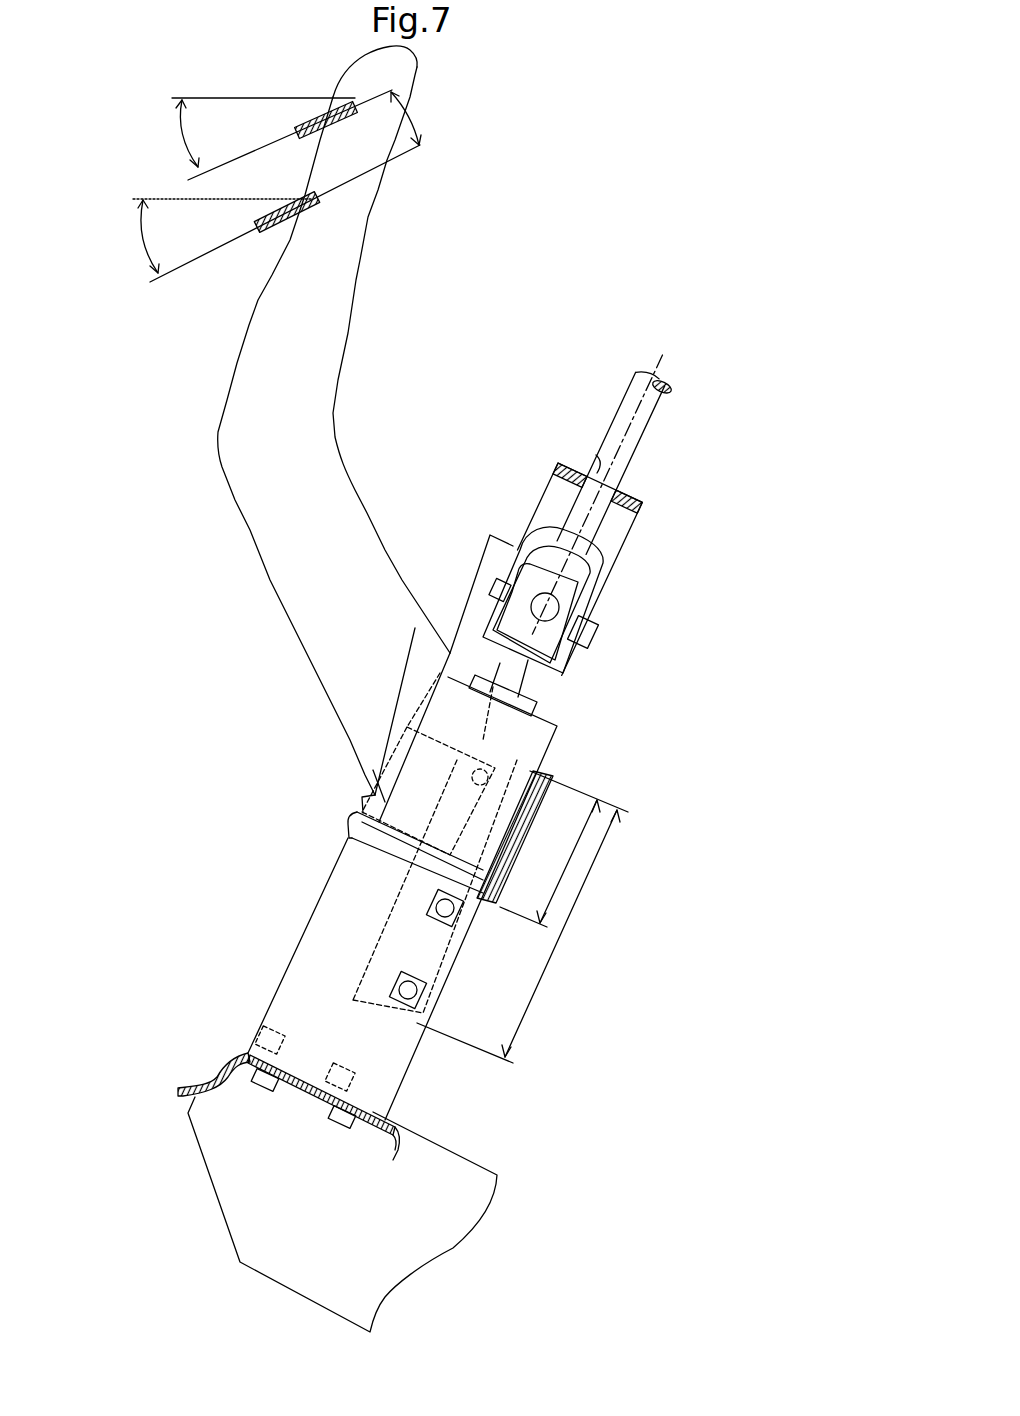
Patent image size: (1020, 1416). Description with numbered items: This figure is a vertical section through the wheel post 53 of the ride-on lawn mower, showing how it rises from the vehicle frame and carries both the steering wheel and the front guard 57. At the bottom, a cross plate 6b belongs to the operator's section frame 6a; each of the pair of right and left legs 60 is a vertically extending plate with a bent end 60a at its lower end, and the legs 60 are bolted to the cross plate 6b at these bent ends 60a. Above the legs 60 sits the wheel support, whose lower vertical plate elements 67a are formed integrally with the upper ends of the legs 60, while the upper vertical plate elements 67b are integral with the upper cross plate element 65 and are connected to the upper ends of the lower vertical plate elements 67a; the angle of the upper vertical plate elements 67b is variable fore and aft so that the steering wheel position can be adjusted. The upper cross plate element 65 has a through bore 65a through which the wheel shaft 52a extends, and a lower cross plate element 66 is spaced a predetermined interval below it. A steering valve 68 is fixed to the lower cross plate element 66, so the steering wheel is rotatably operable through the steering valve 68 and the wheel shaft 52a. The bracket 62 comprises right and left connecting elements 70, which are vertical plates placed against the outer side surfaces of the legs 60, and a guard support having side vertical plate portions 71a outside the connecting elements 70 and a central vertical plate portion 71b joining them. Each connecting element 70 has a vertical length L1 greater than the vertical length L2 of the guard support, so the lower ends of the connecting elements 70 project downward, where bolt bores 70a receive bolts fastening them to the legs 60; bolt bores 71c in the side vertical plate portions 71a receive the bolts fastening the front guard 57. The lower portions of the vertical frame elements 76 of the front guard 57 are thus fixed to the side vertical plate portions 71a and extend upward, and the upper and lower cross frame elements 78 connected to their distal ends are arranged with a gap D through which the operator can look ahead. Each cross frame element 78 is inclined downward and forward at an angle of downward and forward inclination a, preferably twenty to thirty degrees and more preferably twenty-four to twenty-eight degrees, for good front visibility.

The front guard 57 is at (147, 173).
The cross frame elements 78 is at (320, 127).
The gap D is at (407, 123).
The angle of downward and forward inclination a is at (162, 186).
The vertical frame elements 76 is at (233, 402).
The wheel post 53 is at (522, 453).
The through bore 65a is at (597, 473).
The wheel shaft 52a is at (643, 428).
The upper cross plate element 65 is at (640, 495).
The lower vertical plate elements 67a is at (470, 580).
The upper vertical plate elements 67b is at (613, 543).
The steering valve 68 is at (540, 723).
The bolt bores 71c is at (460, 735).
The central vertical plate portion 71b is at (573, 780).
The lower cross plate element 66 is at (377, 813).
The side vertical plate portions 71a is at (373, 853).
The legs 60 is at (300, 933).
The connecting elements 70 is at (400, 930).
The bolt bores 70a is at (435, 905).
The bent end 60a is at (250, 1050).
The bracket 62 is at (527, 863).
The vertical length L1 is at (570, 920).
The vertical length L2 is at (570, 860).
The cross plate 6b is at (323, 1100).
The operator's section frame 6a is at (453, 1160).